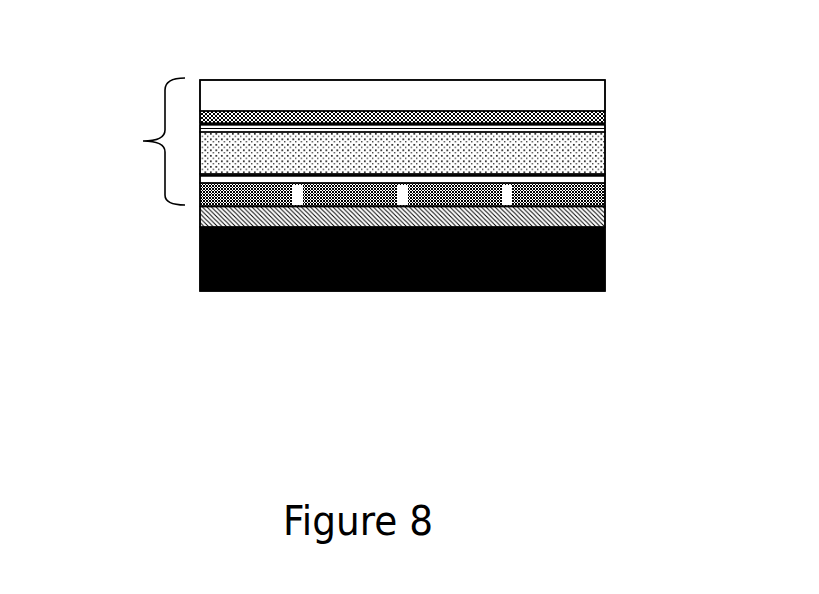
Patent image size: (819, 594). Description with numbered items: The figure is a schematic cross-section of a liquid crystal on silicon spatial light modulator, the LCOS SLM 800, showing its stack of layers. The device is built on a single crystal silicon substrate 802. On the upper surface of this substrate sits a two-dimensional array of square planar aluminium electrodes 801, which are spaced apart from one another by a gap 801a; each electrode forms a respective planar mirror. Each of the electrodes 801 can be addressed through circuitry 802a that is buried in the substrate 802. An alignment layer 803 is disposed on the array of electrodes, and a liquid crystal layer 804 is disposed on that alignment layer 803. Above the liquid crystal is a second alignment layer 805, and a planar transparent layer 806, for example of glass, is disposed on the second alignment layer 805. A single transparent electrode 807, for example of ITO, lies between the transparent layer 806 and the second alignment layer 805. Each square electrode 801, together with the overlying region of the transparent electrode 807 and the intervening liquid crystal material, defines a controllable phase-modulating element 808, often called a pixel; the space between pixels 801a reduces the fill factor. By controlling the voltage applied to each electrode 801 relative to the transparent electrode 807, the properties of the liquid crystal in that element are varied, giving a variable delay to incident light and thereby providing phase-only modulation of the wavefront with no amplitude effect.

The LCOS SLM 800 is at (658, 420).
The square planar aluminium electrode 801 is at (471, 216).
The gap 801a is at (507, 195).
The single crystal silicon substrate 802 is at (200, 270).
The circuitry 802a is at (200, 218).
The alignment layer 803 is at (607, 178).
The liquid crystal layer 804 is at (608, 147).
The second alignment layer 805 is at (608, 129).
The planar transparent layer 806 is at (609, 92).
The transparent electrode 807 is at (609, 117).
The phase-modulating element 808 is at (143, 156).